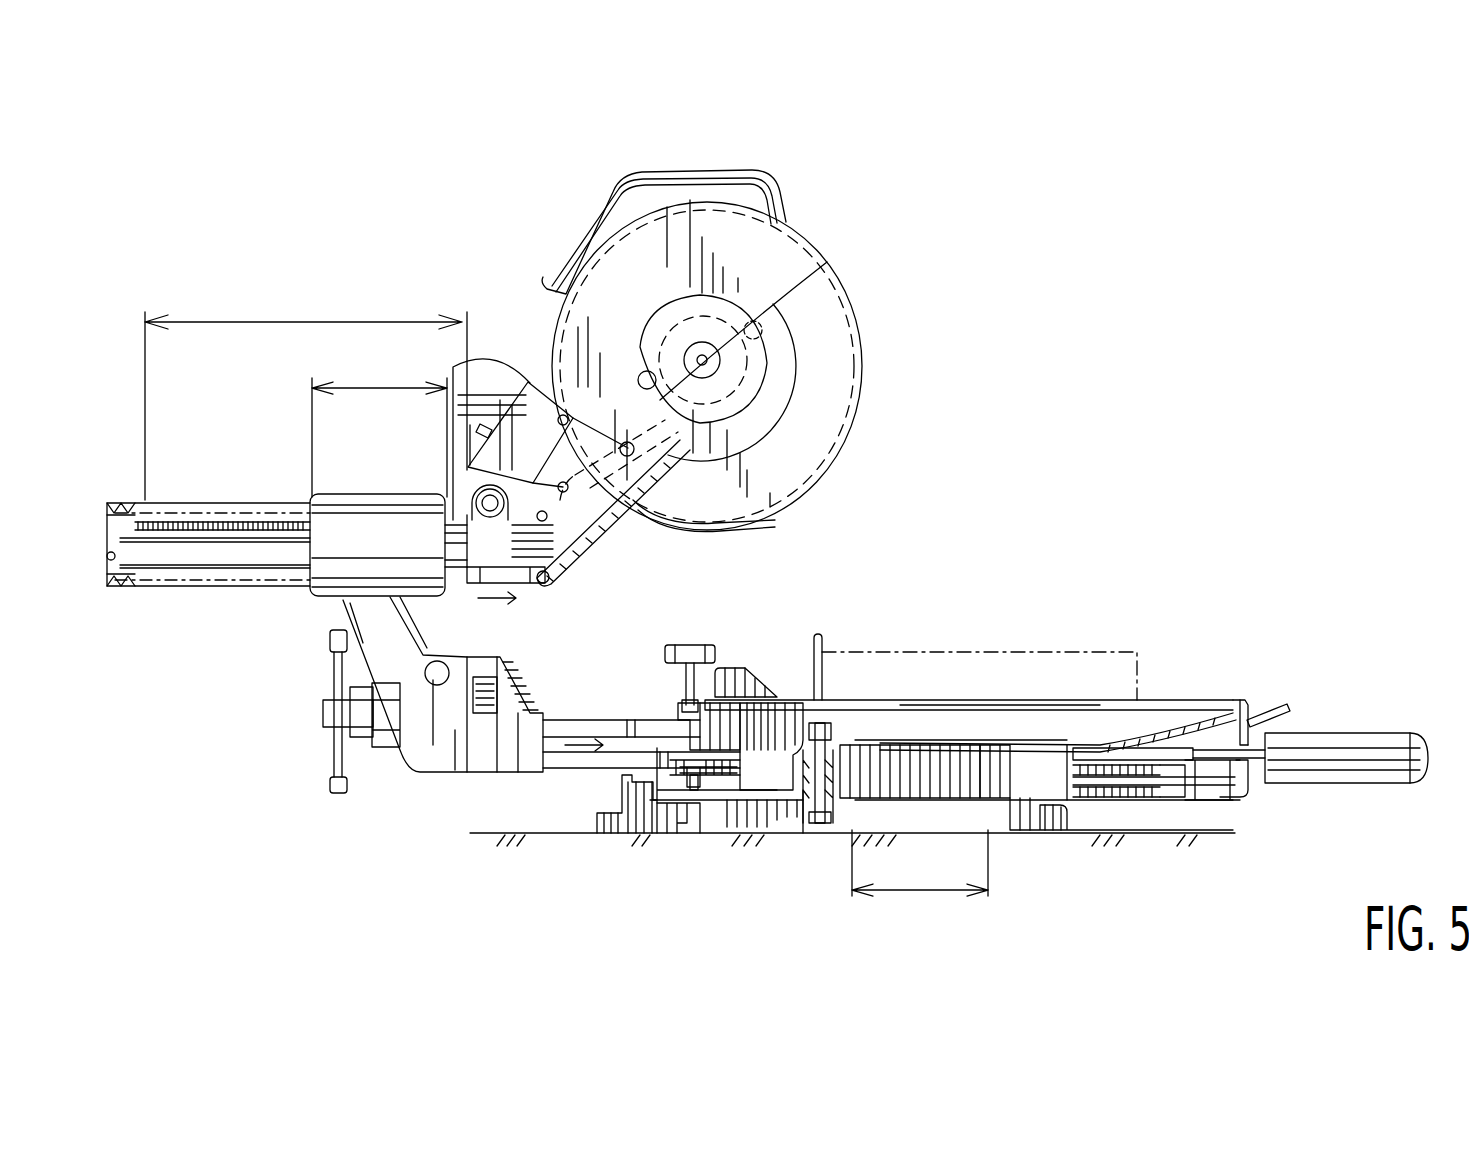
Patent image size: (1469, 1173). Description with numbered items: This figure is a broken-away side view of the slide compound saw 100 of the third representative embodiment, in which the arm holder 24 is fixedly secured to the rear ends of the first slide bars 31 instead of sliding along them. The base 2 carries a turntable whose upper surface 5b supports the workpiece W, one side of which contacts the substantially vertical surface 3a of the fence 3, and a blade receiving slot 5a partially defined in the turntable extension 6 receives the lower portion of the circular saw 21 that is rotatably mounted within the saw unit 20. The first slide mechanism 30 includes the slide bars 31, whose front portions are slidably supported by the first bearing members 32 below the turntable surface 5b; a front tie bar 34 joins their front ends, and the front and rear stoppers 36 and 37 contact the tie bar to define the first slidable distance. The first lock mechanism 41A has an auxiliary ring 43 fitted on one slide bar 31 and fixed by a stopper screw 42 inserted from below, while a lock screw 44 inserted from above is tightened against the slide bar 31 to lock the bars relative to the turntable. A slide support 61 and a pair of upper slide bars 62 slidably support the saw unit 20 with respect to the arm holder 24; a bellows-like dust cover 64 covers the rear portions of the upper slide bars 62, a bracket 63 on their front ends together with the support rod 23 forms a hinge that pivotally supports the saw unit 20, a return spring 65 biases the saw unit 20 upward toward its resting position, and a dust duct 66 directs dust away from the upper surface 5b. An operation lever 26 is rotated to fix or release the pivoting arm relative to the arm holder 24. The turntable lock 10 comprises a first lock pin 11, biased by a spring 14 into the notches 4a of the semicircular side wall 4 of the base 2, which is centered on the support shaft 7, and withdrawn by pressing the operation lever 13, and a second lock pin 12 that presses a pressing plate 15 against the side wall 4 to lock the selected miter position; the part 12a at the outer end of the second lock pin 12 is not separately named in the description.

The slide compound saw 100 is at (513, 243).
The circular saw unit 20 is at (720, 200).
The circular saw 21 is at (868, 384).
The dust duct 66 is at (458, 366).
The support rod 23 is at (478, 482).
The bracket 63 is at (476, 503).
The return spring 65 is at (583, 553).
The slide support 61 is at (372, 495).
The upper slide bars 62 is at (230, 560).
The bellows-like dust cover 64 is at (130, 586).
The arm holder 24 is at (426, 757).
The operation lever 26 is at (328, 788).
The first slide mechanism 30 is at (573, 712).
The lock screw 44 is at (684, 652).
The auxiliary ring 43 is at (678, 703).
The first lock mechanism 41A is at (690, 640).
The fence 3 is at (745, 668).
The vertically-oriented surface 3a is at (817, 640).
The blade receiving slot 5a is at (895, 700).
The upper surface of the turntable 5b is at (975, 700).
The workpiece W is at (1140, 690).
The turntable extension 6 is at (1175, 737).
The operation lever 13 is at (1266, 702).
The grip 12a is at (1342, 748).
The second lock pin 12 is at (1240, 782).
The turntable lock 10 is at (1258, 786).
The pressing plate 15 is at (1120, 800).
The first lock pin 11 is at (1140, 800).
The spring 14 is at (1210, 800).
The side wall 4 is at (1056, 815).
The notches 4a is at (1066, 806).
The front stopper 36 is at (1012, 810).
The front tie bar 34 is at (860, 820).
The first bearing members 32 is at (737, 830).
The support shaft 7 is at (814, 830).
The rear stopper 37 is at (823, 825).
The stopper screw 42 is at (691, 830).
The slide bars 31 is at (661, 830).
The base 2 is at (600, 830).